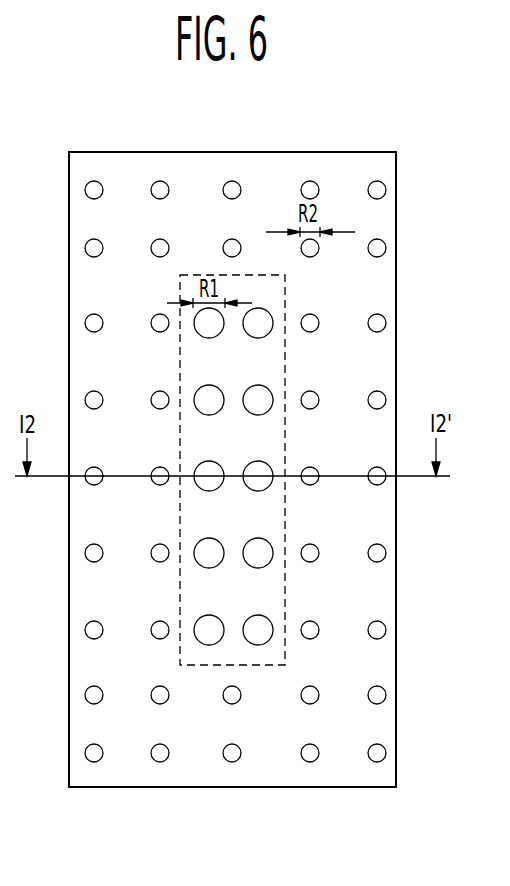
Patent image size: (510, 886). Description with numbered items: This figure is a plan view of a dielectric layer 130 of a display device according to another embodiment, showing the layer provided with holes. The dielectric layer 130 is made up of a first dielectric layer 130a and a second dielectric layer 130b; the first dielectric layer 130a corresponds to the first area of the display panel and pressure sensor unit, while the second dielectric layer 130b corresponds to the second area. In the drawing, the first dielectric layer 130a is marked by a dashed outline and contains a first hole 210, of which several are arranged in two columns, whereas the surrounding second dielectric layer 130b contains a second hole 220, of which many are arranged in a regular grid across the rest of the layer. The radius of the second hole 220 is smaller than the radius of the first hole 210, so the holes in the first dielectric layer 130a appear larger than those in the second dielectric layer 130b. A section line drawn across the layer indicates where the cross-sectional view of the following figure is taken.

The dielectric layer 130 is at (313, 152).
The first dielectric layer 130a is at (275, 653).
The second dielectric layer 130b is at (380, 363).
The first hole 210 is at (271, 314).
The second hole 220 is at (386, 322).